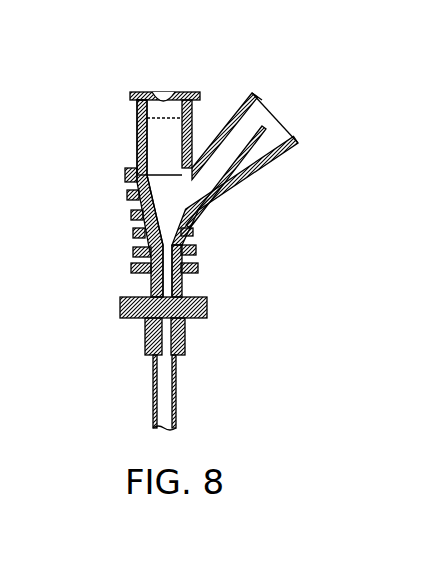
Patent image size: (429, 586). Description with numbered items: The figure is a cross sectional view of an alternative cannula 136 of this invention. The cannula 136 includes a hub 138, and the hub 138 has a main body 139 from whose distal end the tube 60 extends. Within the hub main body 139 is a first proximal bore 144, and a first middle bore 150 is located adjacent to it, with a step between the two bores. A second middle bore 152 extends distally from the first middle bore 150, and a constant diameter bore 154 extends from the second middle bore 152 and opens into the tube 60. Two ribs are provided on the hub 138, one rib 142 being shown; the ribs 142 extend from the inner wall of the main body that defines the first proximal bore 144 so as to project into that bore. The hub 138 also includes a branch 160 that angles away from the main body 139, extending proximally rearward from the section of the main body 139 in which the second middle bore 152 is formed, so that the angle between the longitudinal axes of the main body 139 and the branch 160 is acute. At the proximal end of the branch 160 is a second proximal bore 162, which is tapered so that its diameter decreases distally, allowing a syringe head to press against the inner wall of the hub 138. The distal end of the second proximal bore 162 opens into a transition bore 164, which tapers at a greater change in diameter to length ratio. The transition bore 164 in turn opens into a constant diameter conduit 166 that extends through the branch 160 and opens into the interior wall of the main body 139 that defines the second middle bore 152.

The cannula 136 is at (324, 221).
The rib 142 is at (162, 95).
The first proximal bore 144 is at (178, 97).
The hub 138 is at (137, 135).
The first middle bore 150 is at (160, 148).
The second middle bore 152 is at (160, 193).
The main body 139 is at (133, 252).
The constant diameter bore 154 is at (193, 250).
The tube 60 is at (174, 402).
The branch 160 is at (270, 163).
The second proximal bore 162 is at (270, 122).
The transition bore 164 is at (222, 173).
The conduit 166 is at (196, 204).